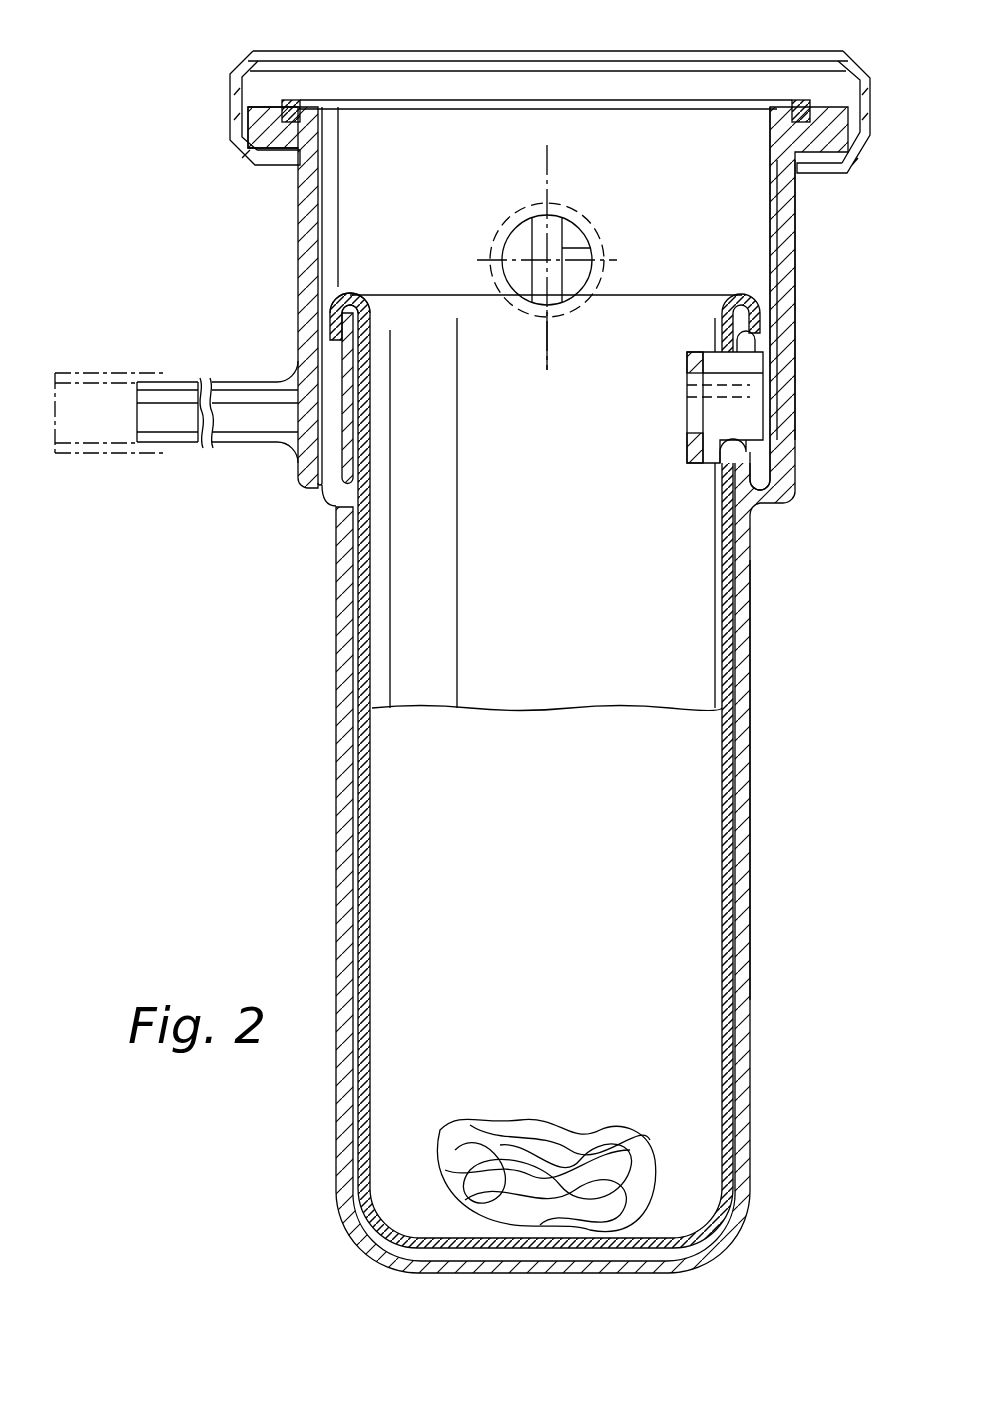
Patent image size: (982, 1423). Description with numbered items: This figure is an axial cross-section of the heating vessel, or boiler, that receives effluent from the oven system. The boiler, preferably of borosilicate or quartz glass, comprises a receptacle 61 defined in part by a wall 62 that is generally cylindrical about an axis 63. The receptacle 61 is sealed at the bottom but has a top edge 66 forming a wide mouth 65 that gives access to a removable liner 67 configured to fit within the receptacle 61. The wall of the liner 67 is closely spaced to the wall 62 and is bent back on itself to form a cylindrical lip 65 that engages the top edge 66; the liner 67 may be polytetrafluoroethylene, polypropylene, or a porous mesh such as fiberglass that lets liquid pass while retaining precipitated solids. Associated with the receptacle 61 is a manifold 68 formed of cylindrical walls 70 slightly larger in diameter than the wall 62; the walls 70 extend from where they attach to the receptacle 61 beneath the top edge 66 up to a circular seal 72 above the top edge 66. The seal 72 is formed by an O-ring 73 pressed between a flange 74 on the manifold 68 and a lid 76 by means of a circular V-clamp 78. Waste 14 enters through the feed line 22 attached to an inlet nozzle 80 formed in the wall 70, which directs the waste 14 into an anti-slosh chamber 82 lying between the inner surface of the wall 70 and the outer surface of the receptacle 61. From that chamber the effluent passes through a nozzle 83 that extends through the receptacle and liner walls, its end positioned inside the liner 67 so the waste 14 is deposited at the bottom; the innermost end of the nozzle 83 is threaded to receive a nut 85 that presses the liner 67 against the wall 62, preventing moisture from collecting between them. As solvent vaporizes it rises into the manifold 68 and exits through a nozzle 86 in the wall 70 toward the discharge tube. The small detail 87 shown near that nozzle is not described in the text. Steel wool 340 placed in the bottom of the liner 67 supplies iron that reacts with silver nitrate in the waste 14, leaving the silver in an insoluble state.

The waste 14 is at (600, 990).
The feed line 22 is at (95, 458).
The receptacle 61 is at (786, 686).
The wall 62 is at (752, 582).
The axis 63 is at (547, 372).
The wide mouth 65 is at (352, 294).
The top edge 66 is at (430, 295).
The removable liner 67 is at (370, 563).
The manifold 68 is at (812, 289).
The cylindrical walls 70 is at (300, 489).
The circular seal 72 is at (212, 106).
The O-ring 73 is at (292, 99).
The flange 74 is at (272, 145).
The lid 76 is at (710, 85).
The circular V-clamp 78 is at (869, 132).
The inlet nozzle 80 is at (180, 381).
The anti-slosh chamber 82 is at (766, 462).
The nozzle 83 is at (716, 466).
The nut 85 is at (690, 354).
The nozzle 86 is at (582, 212).
The aperture insert 87 is at (598, 241).
The steel wool 340 is at (632, 1095).